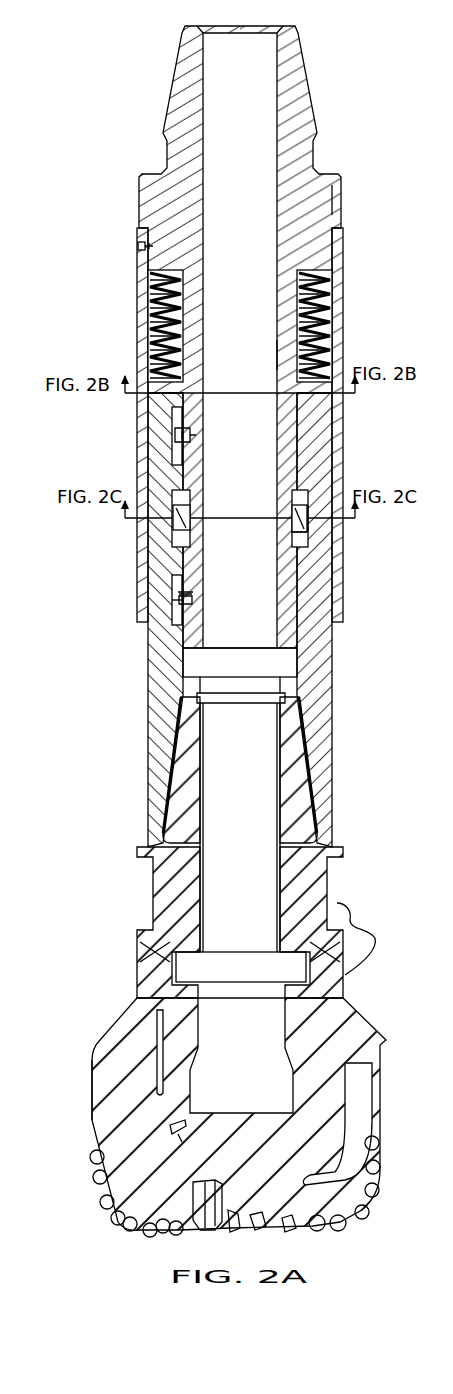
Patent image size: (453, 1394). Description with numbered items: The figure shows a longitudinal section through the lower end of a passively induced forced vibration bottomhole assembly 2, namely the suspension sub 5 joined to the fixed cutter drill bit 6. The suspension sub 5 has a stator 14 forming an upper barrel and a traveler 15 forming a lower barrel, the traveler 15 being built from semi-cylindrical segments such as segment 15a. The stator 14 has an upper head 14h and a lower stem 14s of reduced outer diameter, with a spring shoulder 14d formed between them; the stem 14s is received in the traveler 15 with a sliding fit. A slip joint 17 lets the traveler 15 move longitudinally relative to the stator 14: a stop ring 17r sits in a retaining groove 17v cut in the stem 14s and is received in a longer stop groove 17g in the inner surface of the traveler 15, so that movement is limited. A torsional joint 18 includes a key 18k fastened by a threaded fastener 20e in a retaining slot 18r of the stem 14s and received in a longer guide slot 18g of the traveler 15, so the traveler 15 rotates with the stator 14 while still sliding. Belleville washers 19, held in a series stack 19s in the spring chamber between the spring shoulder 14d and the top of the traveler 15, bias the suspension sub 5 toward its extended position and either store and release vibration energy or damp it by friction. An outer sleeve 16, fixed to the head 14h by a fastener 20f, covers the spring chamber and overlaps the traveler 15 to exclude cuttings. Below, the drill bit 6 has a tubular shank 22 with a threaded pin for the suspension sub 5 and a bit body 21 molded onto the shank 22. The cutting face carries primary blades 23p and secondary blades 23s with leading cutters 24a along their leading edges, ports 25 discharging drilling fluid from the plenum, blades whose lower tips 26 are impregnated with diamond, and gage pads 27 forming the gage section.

The bottomhole assembly 2 is at (80, 892).
The suspension sub 5 is at (98, 684).
The fixed cutter drill bit 6 is at (97, 946).
The stator 14 is at (238, 197).
The upper head 14h is at (277, 156).
The lower stem 14s is at (277, 355).
The spring shoulder 14d is at (331, 196).
The traveler 15 is at (343, 672).
The semi-cylindrical segment 15a is at (441, 273).
The outer sleeve 16 is at (344, 258).
The slip joint 17 is at (418, 547).
The retaining groove 17v is at (291, 512).
The stop ring 17r is at (306, 528).
The stop groove 17g is at (307, 545).
The torsional joint 18 is at (80, 636).
The guide slot 18g is at (177, 583).
The key 18k is at (178, 610).
The retaining slot 18r is at (193, 603).
The Belleville washers 19 is at (332, 316).
The stacked arrangement 19s is at (135, 270).
The threaded fastener 20e is at (195, 593).
The fastener 20f is at (139, 245).
The bit body 21 is at (110, 1040).
The shank 22 is at (271, 922).
The secondary blades 23s is at (118, 1231).
The primary blades 23p is at (340, 1198).
The leading cutters 24a is at (380, 1166).
The port 25 is at (177, 1122).
The lower tip 26 is at (328, 1233).
The gage pads 27 is at (92, 1085).